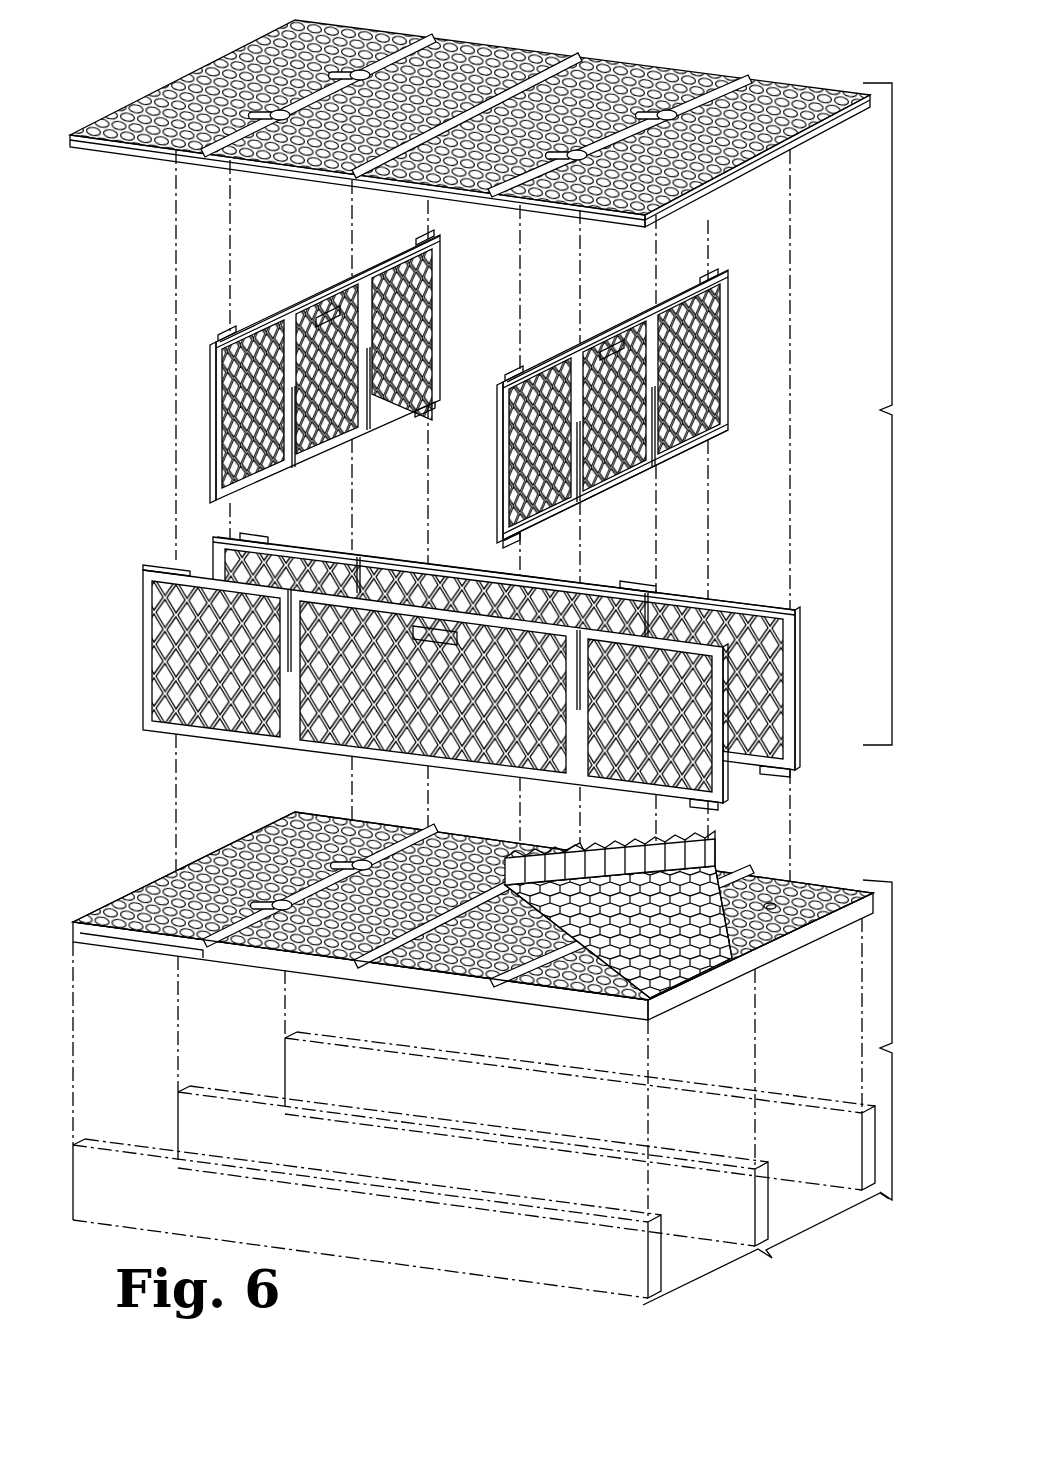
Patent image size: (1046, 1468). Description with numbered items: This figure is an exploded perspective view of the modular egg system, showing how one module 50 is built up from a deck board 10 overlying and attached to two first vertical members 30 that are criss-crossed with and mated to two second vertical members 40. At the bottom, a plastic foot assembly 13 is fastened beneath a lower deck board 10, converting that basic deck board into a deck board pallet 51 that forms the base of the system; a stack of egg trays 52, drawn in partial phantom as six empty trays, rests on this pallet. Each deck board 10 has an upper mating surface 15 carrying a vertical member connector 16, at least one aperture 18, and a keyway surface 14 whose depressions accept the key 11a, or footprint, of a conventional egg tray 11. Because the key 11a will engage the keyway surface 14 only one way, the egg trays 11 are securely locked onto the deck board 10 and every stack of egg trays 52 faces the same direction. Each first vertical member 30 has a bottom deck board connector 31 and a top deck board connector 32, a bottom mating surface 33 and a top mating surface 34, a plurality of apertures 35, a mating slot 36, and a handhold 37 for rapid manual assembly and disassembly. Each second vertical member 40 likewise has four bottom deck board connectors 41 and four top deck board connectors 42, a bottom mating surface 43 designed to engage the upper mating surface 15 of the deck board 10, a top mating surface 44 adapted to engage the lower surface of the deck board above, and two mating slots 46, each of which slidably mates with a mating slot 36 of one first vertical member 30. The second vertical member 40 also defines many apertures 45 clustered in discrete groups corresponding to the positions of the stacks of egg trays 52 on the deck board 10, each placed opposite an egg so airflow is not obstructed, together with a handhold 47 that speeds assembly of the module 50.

The deck board 10 is at (790, 57).
The egg tray 11 is at (720, 963).
The key 11a is at (662, 990).
The plastic foot assembly 13 is at (481, 1168).
The keyway surface 14 is at (120, 940).
The upper mating surface 15 is at (150, 885).
The vertical member connector 16 is at (772, 903).
The aperture 18 is at (367, 868).
The first vertical member 30 is at (752, 278).
The bottom deck board connector 31 is at (440, 408).
The top deck board connector 32 is at (730, 283).
The bottom mating surface 33 is at (612, 486).
The top mating surface 34 is at (252, 330).
The aperture 35 is at (682, 300).
The mating slot 36 is at (580, 498).
The handhold 37 is at (330, 305).
The second vertical member 40 is at (728, 582).
The bottom deck board connector 41 is at (702, 808).
The top deck board connector 42 is at (250, 536).
The bottom mating surface 43 is at (385, 858).
The top mating surface 44 is at (313, 545).
The aperture 45 is at (313, 700).
The mating slot 46 is at (636, 592).
The handhold 47 is at (482, 600).
The module 50 is at (866, 414).
The deck board pallet 51 is at (865, 1040).
The stack of egg trays 52 is at (492, 985).